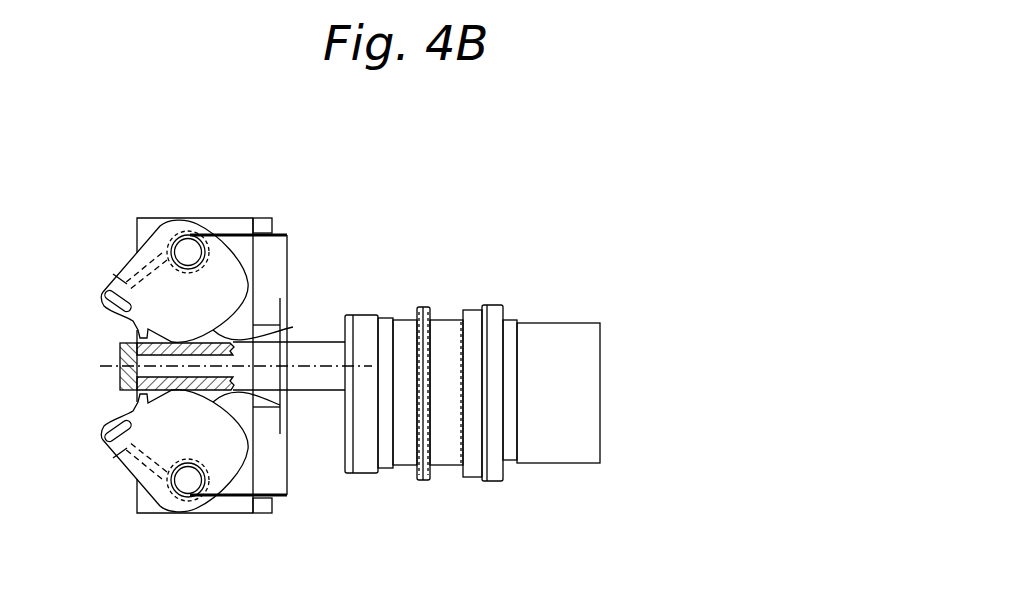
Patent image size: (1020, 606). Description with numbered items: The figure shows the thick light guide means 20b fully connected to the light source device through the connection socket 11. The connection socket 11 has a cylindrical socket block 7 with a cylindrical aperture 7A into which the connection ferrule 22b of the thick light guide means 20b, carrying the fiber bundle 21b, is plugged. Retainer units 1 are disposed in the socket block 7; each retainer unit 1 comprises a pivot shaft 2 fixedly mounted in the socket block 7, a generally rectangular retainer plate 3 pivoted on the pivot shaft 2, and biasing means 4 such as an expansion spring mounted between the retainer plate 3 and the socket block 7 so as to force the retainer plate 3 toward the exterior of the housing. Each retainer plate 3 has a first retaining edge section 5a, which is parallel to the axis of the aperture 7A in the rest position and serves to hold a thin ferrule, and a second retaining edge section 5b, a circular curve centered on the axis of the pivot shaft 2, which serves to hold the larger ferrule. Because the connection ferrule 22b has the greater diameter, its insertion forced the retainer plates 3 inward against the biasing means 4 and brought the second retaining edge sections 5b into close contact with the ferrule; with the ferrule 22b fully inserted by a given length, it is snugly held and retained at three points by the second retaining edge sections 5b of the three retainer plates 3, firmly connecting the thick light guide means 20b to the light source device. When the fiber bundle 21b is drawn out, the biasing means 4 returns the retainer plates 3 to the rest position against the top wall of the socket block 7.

The retainer unit 1 is at (146, 371).
The pivot shaft 2 is at (203, 543).
The retainer plate 3 is at (163, 540).
The biasing means 4 is at (117, 272).
The first retaining edge section 5a is at (115, 317).
The second retaining edge section 5b is at (294, 411).
The cylindrical socket block 7 is at (287, 484).
The cylindrical aperture 7A is at (263, 408).
The connection socket 11 is at (272, 218).
The thick light guide means 20b is at (490, 303).
The fiber bundle 21b is at (133, 338).
The connection ferrule 22b is at (335, 342).